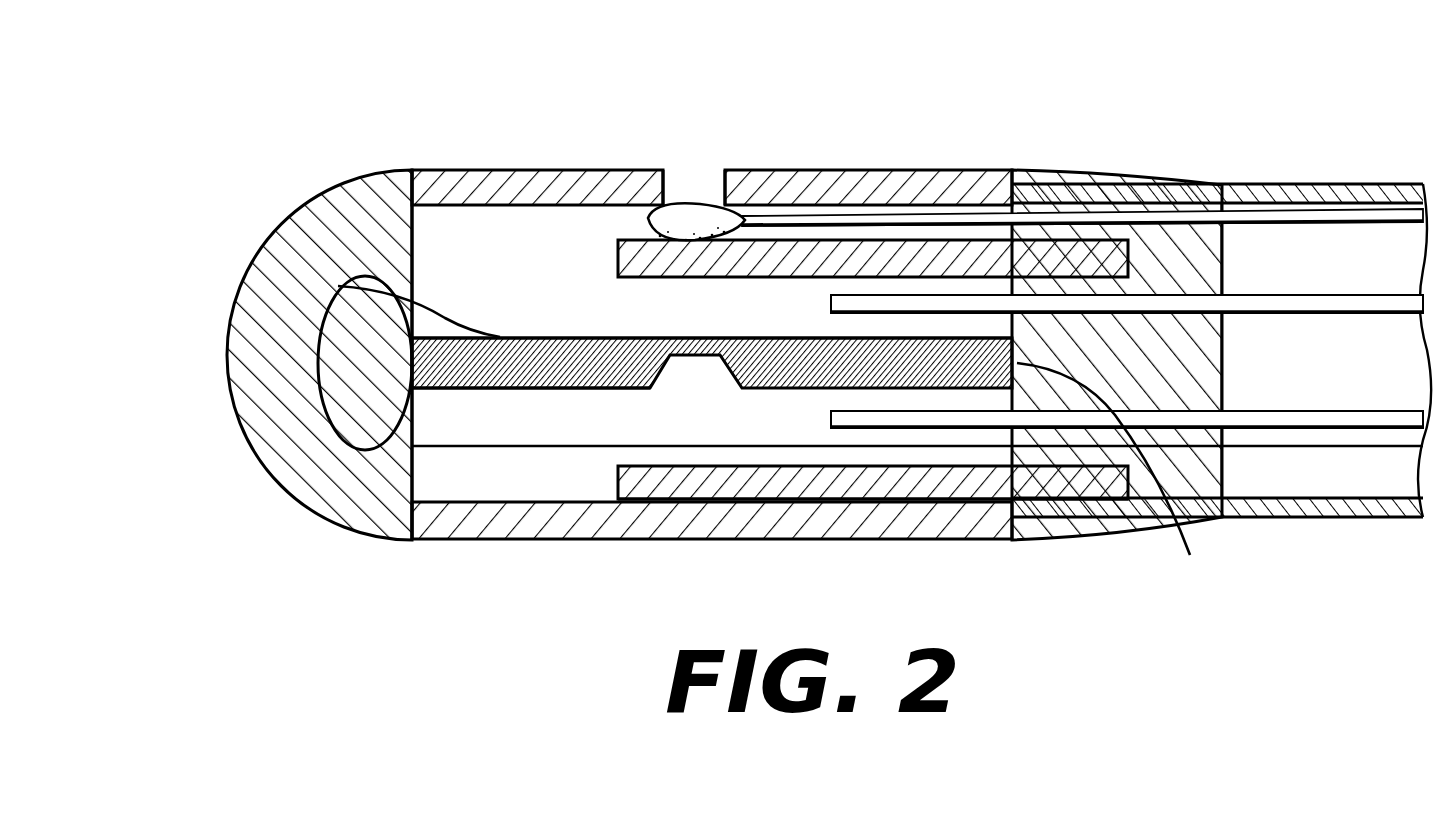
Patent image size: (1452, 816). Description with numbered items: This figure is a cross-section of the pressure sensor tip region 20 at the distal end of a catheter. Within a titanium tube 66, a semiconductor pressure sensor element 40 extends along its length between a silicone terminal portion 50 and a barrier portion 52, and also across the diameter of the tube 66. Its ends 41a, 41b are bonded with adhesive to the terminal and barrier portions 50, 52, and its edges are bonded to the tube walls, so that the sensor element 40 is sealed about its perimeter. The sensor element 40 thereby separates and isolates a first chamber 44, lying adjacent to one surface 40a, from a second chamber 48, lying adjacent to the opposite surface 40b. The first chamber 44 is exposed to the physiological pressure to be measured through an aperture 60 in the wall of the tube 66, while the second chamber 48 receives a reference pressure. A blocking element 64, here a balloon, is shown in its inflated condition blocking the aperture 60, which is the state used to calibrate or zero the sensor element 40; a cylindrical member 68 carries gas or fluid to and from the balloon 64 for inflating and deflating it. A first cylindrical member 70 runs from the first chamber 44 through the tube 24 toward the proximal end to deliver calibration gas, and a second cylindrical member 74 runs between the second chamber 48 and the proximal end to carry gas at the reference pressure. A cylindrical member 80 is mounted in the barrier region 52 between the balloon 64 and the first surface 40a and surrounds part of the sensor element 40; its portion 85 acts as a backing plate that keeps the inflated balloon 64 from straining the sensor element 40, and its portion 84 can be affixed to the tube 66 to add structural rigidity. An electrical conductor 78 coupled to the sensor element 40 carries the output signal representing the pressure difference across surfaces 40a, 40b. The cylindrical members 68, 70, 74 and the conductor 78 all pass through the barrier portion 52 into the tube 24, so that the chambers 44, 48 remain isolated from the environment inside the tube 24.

The pressure sensor tip region 20 is at (645, 77).
The tube 24 is at (1333, 186).
The pressure sensor element 40 is at (890, 360).
The first surface of the sensor element 40a is at (565, 336).
The opposite surface of the sensor element 40b is at (495, 390).
The end of the pressure sensor element 41a is at (412, 362).
The end of the pressure sensor element 41b is at (1190, 555).
The first chamber 44 is at (518, 253).
The second chamber 48 is at (612, 423).
The terminal portion 50 is at (328, 210).
The barrier portion 52 is at (1165, 260).
The aperture 60 is at (695, 168).
The blocking element 64 is at (663, 208).
The tube 66 is at (445, 170).
The cylindrical member 68 is at (950, 214).
The first cylindrical member 70 is at (1306, 297).
The second cylindrical member 74 is at (1303, 413).
The electrical conductor 78 is at (345, 420).
The cylindrical member 80 is at (840, 263).
The portion of the cylindrical member 84 is at (745, 500).
The portion of the cylindrical member 85 is at (690, 243).